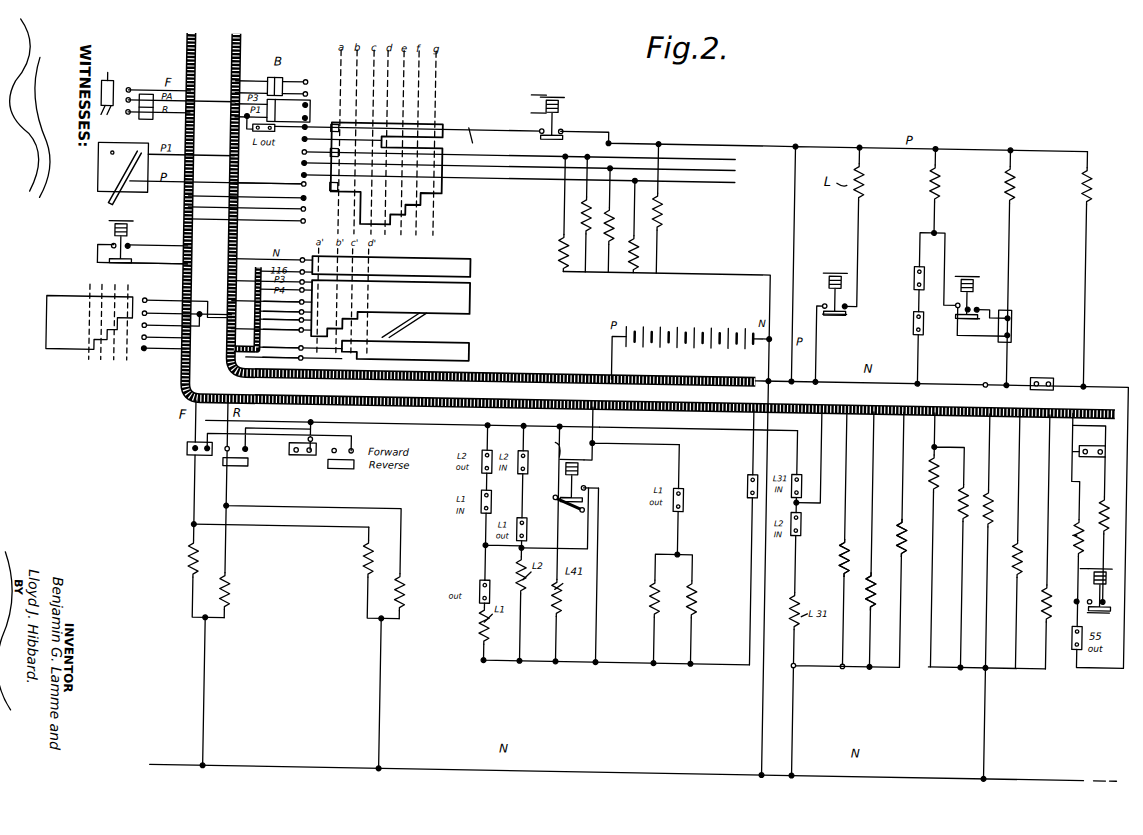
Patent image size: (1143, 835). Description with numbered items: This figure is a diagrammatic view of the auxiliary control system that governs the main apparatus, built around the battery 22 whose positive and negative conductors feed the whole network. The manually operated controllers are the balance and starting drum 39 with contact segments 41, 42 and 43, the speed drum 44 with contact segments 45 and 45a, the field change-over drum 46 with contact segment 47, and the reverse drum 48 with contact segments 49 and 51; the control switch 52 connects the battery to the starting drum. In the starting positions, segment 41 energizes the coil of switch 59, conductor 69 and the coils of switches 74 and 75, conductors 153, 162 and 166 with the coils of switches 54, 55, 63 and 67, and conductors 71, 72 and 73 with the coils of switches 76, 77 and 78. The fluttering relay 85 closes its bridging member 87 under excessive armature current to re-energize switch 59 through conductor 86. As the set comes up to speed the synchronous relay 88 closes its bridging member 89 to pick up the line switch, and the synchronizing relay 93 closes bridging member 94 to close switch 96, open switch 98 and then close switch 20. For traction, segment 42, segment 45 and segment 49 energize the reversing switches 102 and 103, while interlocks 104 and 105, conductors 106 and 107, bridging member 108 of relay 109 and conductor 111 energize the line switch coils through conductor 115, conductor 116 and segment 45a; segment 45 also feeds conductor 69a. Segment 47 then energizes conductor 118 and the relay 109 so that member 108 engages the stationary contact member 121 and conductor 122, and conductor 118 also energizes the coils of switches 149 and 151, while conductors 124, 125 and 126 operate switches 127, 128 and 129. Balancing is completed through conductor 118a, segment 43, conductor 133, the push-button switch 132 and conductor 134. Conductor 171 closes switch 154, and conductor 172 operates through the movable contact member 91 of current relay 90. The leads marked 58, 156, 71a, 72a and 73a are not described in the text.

The reverse drum 48 is at (134, 18).
The contact segment 49 is at (105, 101).
The contact segment 51 is at (148, 120).
The control switch 52 is at (146, 211).
The field change-over push button switch 132 is at (96, 242).
The conductor 133 is at (143, 246).
The conductor 134 is at (146, 256).
The contact segment 47 is at (58, 311).
The field change-over drum 46 is at (31, 364).
The conductor 106 is at (152, 292).
The conductor 118 is at (152, 306).
The conductor 124 is at (152, 318).
The conductor 125 is at (152, 330).
The conductor 126 is at (152, 341).
The contact segment 43 is at (280, 74).
The contact segment 42 is at (313, 100).
The conductor 118a is at (251, 88).
The balance and starting drum 39 is at (472, 205).
The contact segment 41 is at (443, 120).
The conductor 58 is at (468, 129).
The conductor 86 is at (481, 122).
The fluttering relay 85 is at (589, 112).
The bridging member 87 is at (566, 140).
The conductor 153 is at (479, 150).
The conductor 162 is at (479, 161).
The conductor 166 is at (479, 173).
The switch 54 is at (557, 240).
The switch 55 is at (521, 380).
The switch 63 is at (603, 220).
The switch 67 is at (626, 226).
The switch 59 is at (650, 207).
The contact segment 45a is at (451, 263).
The speed drum 44 is at (508, 298).
The contact segment 45 is at (466, 342).
The battery 22 is at (698, 359).
The switch 20 is at (1080, 168).
The switch 96 is at (928, 170).
The switch 98 is at (972, 268).
The synchronizing relay 93 is at (993, 255).
The synchronous relay 88 is at (842, 322).
The bridging member 89 is at (845, 303).
The bridging member 94 is at (957, 300).
The interlock 104 is at (190, 447).
The interlock 105 is at (310, 453).
The reversing switch 102 is at (186, 556).
The reversing switch 103 is at (369, 562).
The conductor 111 is at (379, 564).
The conductor 107 is at (546, 502).
The bridging member 108 is at (569, 515).
The relay 109 is at (627, 509).
The stationary contact member 121 is at (588, 479).
The conductor 122 is at (599, 541).
The switch 149 is at (650, 584).
The switch 151 is at (688, 578).
The conductor 115 is at (750, 566).
The conductor 116 is at (750, 410).
The conductor 171 is at (1073, 453).
The conductor 172 is at (1111, 417).
The resistor 156 is at (1110, 484).
The switch 154 is at (1077, 516).
The current relay 90 is at (1093, 580).
The movable contact member 91 is at (1104, 602).
The switch 127 is at (844, 530).
The switch 128 is at (871, 568).
The switch 129 is at (902, 508).
The conductor 69 is at (934, 429).
The conductor 71 is at (989, 428).
The conductor 72 is at (1022, 428).
The conductor 73 is at (1049, 430).
The switch 74 is at (935, 453).
The switch 75 is at (966, 480).
The switch 76 is at (983, 500).
The switch 77 is at (1020, 528).
The switch 78 is at (1048, 573).
The conductor 69a is at (282, 302).
The conductor 71a is at (281, 312).
The conductor 72a is at (281, 321).
The conductor 73a is at (281, 331).